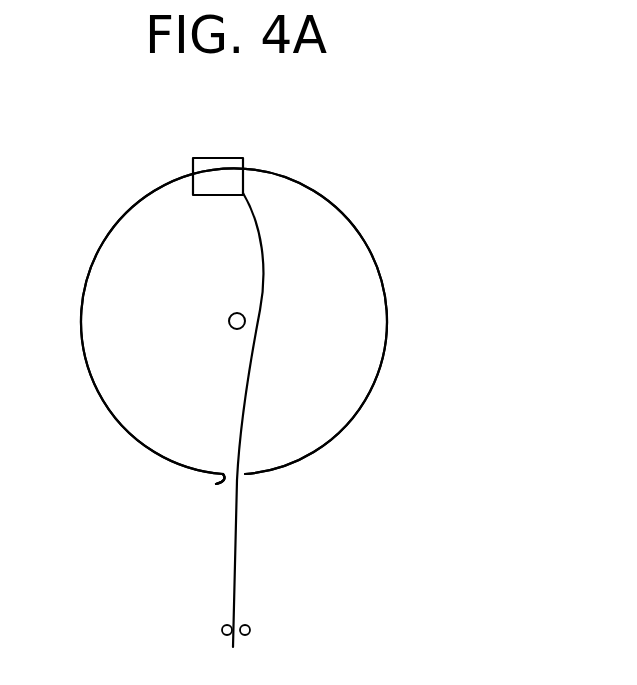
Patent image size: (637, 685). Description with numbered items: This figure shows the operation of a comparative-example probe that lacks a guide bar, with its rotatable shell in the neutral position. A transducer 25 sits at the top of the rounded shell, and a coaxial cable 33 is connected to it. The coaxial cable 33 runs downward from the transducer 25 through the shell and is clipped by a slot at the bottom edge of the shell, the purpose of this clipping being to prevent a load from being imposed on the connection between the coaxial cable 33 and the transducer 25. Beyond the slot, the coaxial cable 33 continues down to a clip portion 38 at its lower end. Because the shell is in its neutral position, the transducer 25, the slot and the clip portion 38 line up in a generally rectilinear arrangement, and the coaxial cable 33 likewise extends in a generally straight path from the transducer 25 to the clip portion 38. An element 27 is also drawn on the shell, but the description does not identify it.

The transducer 25 is at (244, 166).
The eyelet 27 is at (229, 321).
The coaxial cable 33 is at (237, 535).
The clip portion 38 is at (251, 630).